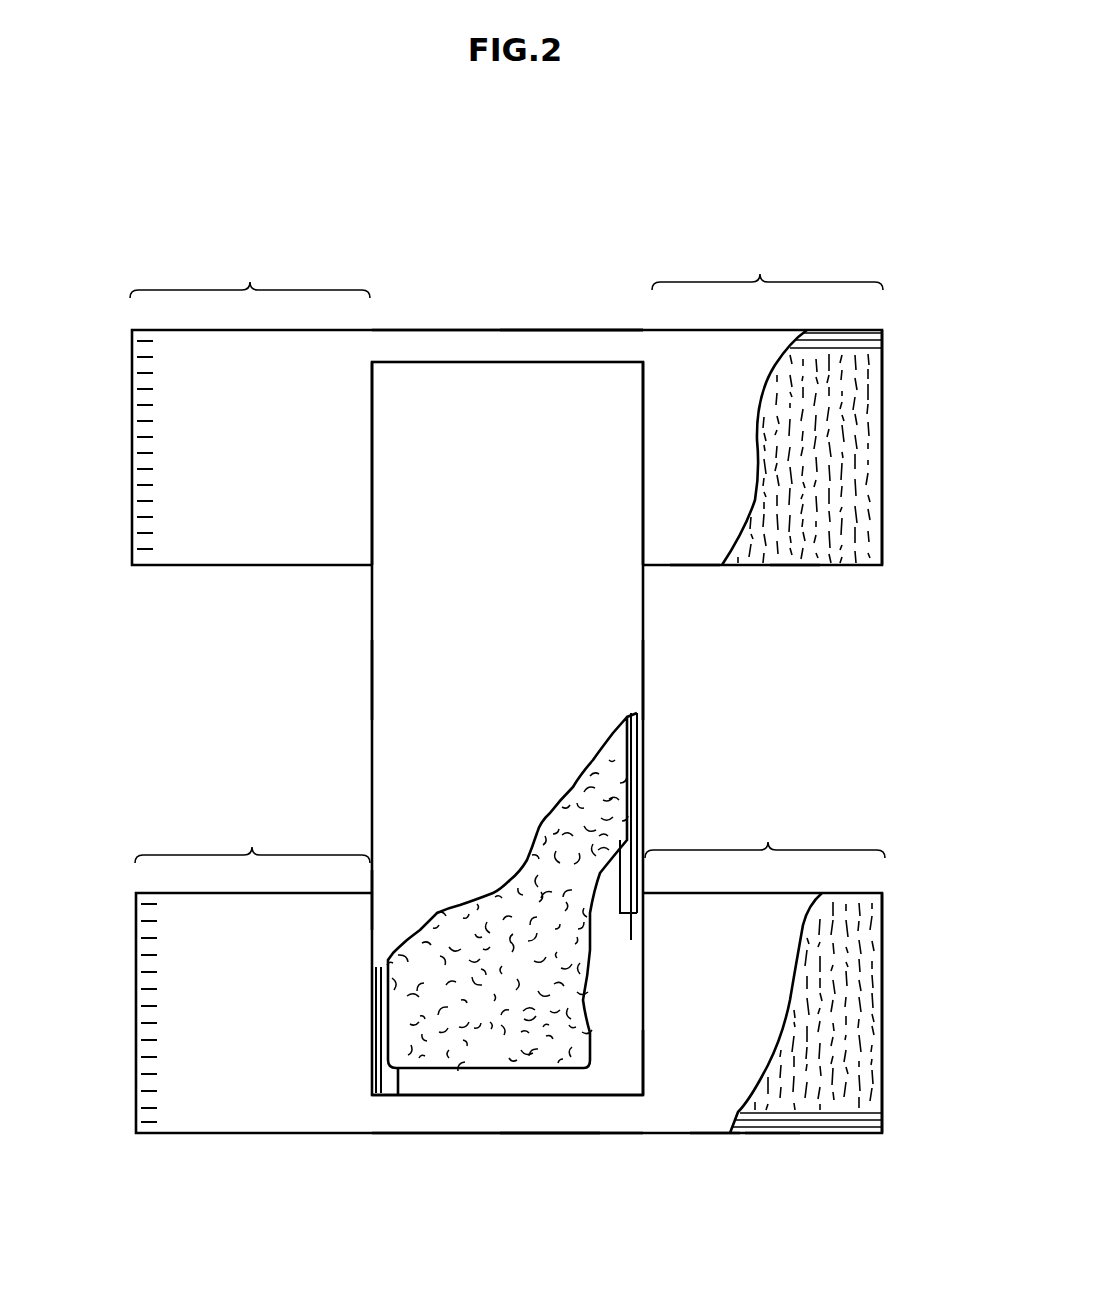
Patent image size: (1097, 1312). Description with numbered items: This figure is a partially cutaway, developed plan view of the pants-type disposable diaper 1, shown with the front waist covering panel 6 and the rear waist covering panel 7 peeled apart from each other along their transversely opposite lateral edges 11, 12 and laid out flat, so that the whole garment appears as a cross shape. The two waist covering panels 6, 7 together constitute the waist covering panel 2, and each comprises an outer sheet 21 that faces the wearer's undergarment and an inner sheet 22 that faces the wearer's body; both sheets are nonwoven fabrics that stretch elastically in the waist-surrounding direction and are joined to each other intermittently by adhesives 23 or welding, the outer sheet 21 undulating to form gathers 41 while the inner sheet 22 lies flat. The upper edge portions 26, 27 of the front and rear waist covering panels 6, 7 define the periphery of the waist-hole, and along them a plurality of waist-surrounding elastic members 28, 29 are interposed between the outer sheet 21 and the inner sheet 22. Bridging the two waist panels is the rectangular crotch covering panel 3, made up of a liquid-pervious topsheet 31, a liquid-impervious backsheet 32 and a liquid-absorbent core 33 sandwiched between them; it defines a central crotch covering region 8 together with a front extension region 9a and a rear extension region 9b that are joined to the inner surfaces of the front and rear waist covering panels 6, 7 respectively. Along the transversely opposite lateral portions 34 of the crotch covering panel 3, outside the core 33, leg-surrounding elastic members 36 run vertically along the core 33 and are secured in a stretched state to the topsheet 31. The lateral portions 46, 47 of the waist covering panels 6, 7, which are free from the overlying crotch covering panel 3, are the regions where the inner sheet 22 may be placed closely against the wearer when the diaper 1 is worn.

The disposable diaper 1 is at (807, 210).
The waist covering panel 2 is at (491, 312).
The crotch covering panel 3 is at (658, 469).
The front waist covering panel 6 is at (188, 984).
The rear waist covering panel 7 is at (180, 458).
The crotch covering region 8 is at (390, 771).
The front extension region 9a is at (393, 1097).
The rear extension region 9b is at (393, 487).
The lateral edge 11 is at (151, 1043).
The lateral edge 12 is at (136, 379).
The outer sheet 21 is at (795, 565).
The inner sheet 22 is at (691, 565).
The adhesives 23 is at (848, 438).
The upper edge portion 26 is at (543, 1120).
The upper edge portion 27 is at (565, 343).
The waist-surrounding elastic members 28 is at (838, 1131).
The waist-surrounding elastic members 29 is at (827, 338).
The topsheet 31 is at (418, 890).
The backsheet 32 is at (641, 1061).
The liquid-absorbent core 33 is at (437, 1048).
The lateral portions 34 is at (393, 690).
The leg-surrounding elastic members 36 is at (643, 830).
The gathers 41 is at (827, 540).
The lateral portion 46 is at (510, 832).
The lateral portion 47 is at (506, 263).